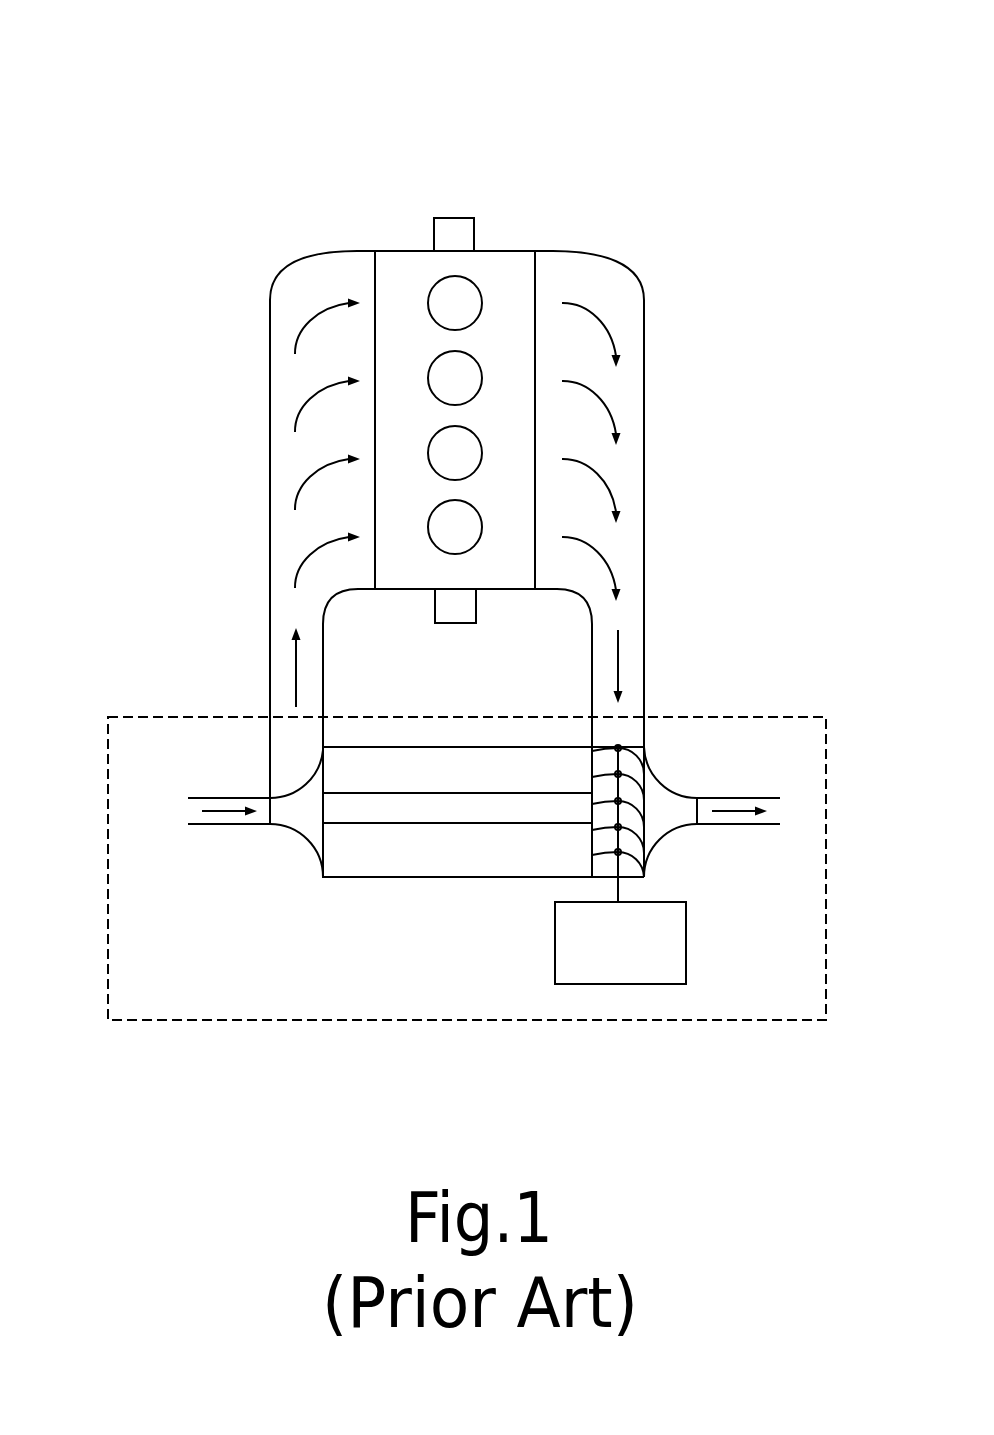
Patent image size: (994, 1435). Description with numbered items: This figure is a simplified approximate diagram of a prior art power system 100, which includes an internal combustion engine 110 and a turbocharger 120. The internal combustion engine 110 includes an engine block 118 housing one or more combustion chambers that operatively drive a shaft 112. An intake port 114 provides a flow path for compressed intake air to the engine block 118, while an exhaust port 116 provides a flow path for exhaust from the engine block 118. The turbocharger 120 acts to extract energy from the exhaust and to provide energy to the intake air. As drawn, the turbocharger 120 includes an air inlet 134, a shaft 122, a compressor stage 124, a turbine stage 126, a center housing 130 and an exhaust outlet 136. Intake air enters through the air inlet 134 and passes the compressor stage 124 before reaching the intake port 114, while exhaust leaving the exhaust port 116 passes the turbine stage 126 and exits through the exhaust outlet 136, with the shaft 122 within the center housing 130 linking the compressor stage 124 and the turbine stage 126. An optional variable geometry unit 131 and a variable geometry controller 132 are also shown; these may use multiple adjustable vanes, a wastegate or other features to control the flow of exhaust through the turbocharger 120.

The power system 100 is at (490, 92).
The internal combustion engine 110 is at (413, 249).
The shaft 112 is at (454, 217).
The intake port 114 is at (288, 273).
The exhaust port 116 is at (621, 268).
The engine block 118 is at (476, 583).
The turbocharger 120 is at (705, 716).
The shaft 122 is at (435, 819).
The compressor stage 124 is at (304, 784).
The turbine stage 126 is at (655, 772).
The center housing 130 is at (410, 878).
The variable geometry unit 131 is at (632, 877).
The variable geometry controller 132 is at (640, 953).
The air inlet 134 is at (224, 797).
The exhaust outlet 136 is at (729, 798).